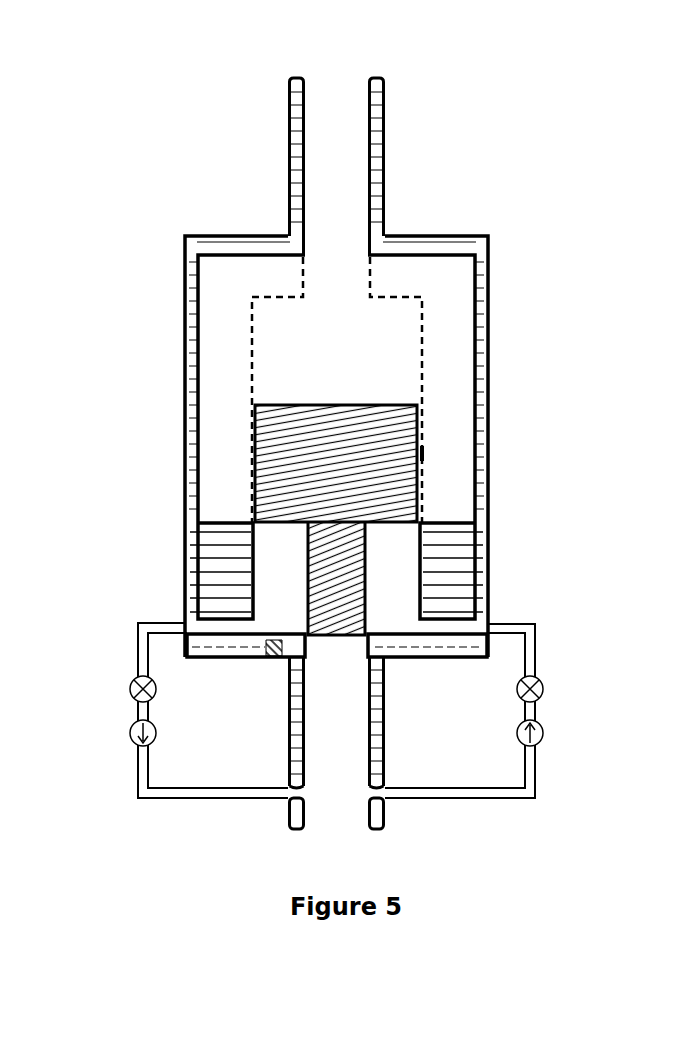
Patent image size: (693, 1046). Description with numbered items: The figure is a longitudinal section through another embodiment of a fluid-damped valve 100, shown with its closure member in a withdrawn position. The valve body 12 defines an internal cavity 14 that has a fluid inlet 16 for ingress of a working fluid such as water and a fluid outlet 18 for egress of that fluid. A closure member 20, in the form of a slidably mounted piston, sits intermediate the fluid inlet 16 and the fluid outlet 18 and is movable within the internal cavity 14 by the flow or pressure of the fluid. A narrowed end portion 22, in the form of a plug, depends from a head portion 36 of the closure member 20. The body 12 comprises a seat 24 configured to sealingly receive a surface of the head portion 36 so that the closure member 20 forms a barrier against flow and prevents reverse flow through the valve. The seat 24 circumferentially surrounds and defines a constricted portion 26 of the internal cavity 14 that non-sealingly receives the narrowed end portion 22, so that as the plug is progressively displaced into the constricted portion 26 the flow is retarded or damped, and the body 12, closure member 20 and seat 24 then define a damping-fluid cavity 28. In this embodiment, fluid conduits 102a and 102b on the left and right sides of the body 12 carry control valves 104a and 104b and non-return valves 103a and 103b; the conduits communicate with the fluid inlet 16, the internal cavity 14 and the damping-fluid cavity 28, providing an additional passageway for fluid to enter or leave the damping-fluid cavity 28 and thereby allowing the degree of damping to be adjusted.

The fluid-damped valve 100 is at (440, 85).
The valve body 12 is at (185, 233).
The internal cavity 14 is at (381, 354).
The fluid inlet 16 is at (347, 797).
The fluid outlet 18 is at (344, 118).
The closure member 20 is at (344, 466).
The narrowed end portion 22 is at (320, 552).
The seat 24 is at (392, 618).
The constricted portion 26 is at (272, 651).
The damping-fluid cavity 28 is at (405, 573).
The head portion 36 is at (424, 453).
The fluid conduit 102a is at (137, 763).
The fluid conduit 102b is at (532, 658).
The non-return valve 103a is at (130, 728).
The non-return valve 103b is at (545, 735).
The control valve 104a is at (147, 692).
The control valve 104b is at (540, 682).